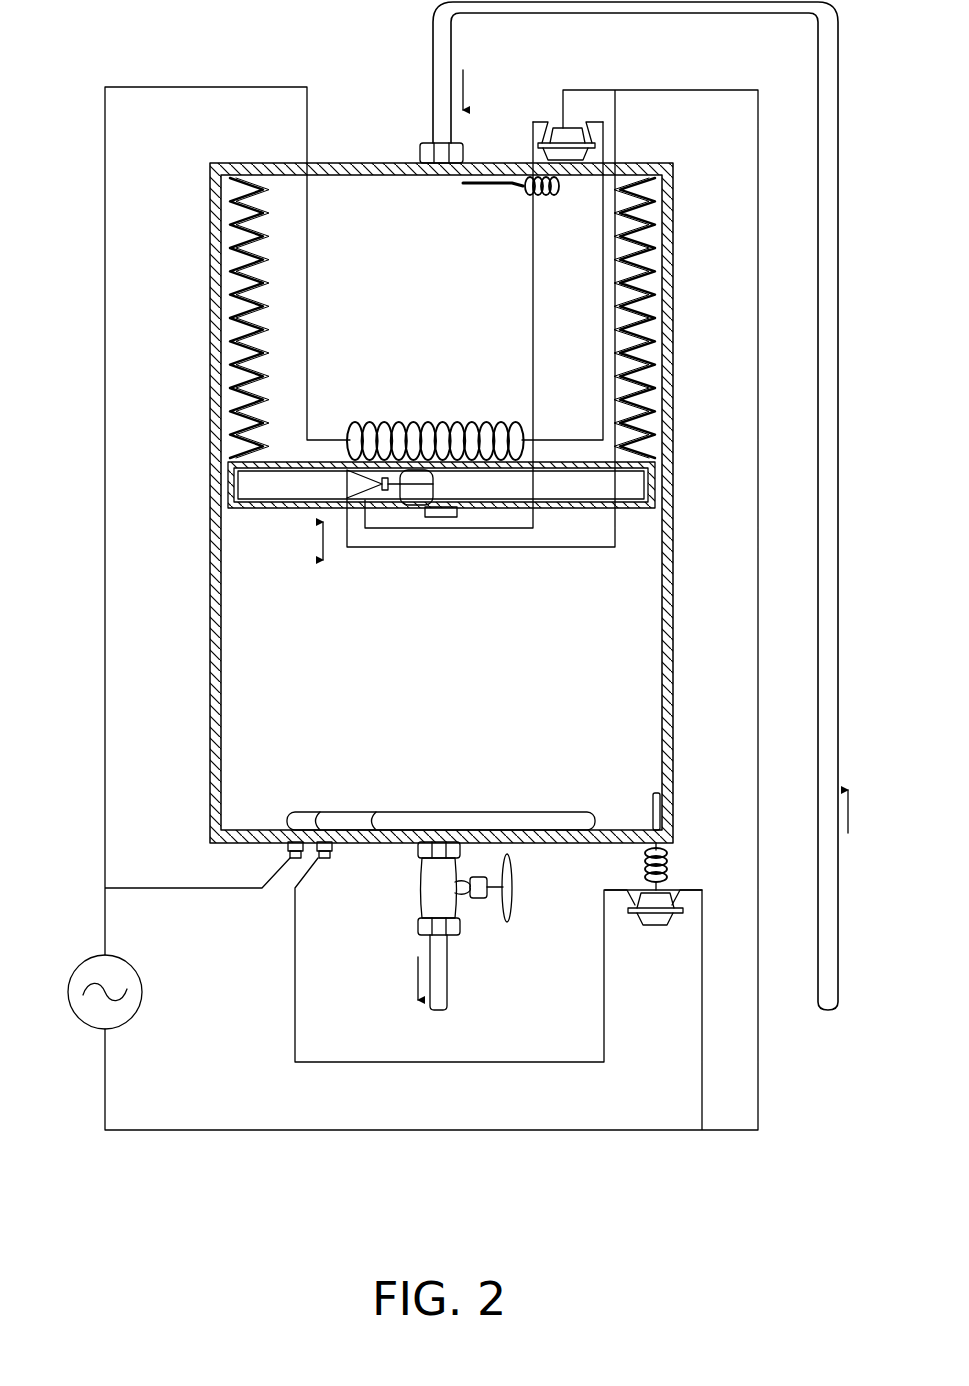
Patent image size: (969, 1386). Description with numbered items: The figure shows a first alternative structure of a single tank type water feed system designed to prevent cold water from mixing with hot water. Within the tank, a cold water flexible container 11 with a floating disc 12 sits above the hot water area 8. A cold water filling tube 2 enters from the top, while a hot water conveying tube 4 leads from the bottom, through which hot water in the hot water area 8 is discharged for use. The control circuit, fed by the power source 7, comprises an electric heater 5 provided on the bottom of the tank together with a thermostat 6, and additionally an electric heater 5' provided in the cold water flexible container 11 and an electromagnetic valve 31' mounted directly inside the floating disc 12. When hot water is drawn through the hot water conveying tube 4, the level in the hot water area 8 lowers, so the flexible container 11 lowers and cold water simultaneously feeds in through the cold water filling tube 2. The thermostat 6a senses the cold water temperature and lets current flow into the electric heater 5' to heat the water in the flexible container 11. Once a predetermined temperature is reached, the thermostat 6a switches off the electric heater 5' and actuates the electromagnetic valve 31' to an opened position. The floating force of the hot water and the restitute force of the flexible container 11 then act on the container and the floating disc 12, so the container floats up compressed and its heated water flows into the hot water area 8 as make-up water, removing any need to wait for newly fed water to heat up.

The cold water filling tube 2 is at (837, 498).
The hot water conveying tube 4 is at (448, 952).
The electric heater 5 is at (441, 807).
The electric heater 5' is at (435, 415).
The thermostat 6 is at (650, 925).
The thermostat 6a is at (558, 127).
The power source 7 is at (90, 957).
The hot water area 8 is at (623, 677).
The flexible container 11 is at (676, 338).
The floating disc 12 is at (272, 508).
The electromagnetic valve 31' is at (402, 533).